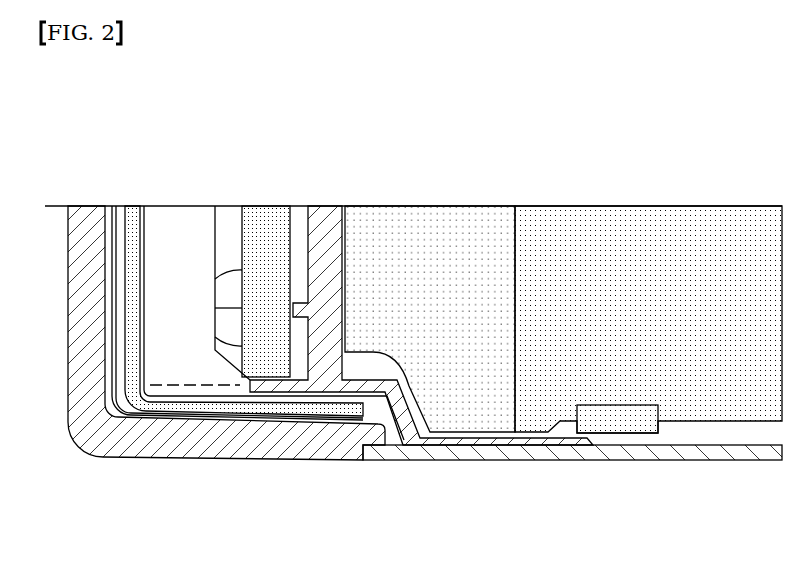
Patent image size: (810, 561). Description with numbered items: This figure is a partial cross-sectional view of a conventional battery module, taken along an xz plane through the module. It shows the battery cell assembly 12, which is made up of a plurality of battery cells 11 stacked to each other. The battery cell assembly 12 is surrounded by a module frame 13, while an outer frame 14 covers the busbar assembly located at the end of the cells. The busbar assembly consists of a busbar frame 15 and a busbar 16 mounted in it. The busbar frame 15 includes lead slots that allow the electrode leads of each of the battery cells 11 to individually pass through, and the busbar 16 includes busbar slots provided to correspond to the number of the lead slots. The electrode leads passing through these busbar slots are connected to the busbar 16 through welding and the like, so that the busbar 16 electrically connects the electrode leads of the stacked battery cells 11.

The battery cell 11 is at (432, 235).
The battery cell assembly 12 is at (638, 198).
The module frame 13 is at (650, 448).
The outer frame 14 is at (242, 440).
The busbar frame 15 is at (320, 223).
The busbar 16 is at (263, 227).